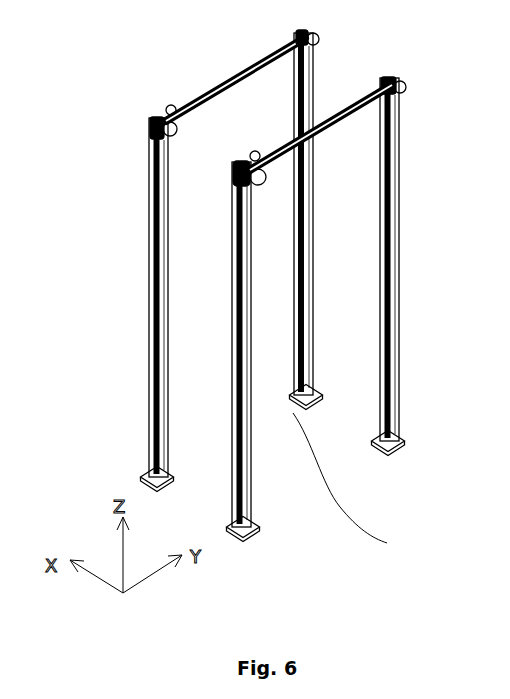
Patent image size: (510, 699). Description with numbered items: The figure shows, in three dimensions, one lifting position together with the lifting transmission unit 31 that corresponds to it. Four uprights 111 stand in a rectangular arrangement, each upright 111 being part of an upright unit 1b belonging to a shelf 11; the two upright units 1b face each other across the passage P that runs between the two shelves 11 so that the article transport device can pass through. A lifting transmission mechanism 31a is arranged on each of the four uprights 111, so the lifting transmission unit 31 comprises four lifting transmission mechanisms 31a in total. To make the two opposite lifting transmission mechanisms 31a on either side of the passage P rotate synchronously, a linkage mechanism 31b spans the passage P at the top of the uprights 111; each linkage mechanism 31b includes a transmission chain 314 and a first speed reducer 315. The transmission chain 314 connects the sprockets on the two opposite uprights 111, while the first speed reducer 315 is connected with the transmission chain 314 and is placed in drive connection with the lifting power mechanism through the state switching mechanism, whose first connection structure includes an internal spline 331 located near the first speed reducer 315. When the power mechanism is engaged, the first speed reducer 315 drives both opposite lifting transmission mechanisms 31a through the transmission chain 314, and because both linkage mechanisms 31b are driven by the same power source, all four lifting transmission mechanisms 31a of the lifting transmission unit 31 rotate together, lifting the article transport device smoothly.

The transmission chain 314 is at (226, 83).
The internal spline 331 is at (163, 106).
The first speed reducer 315 is at (150, 127).
The lifting transmission mechanism 31a is at (297, 92).
The linkage mechanism 31b is at (339, 108).
The upright 111 is at (316, 212).
The upright unit 1b is at (150, 396).
The lifting transmission unit 31 is at (382, 334).
The passage P is at (351, 486).
The shelf 11 is at (445, 568).